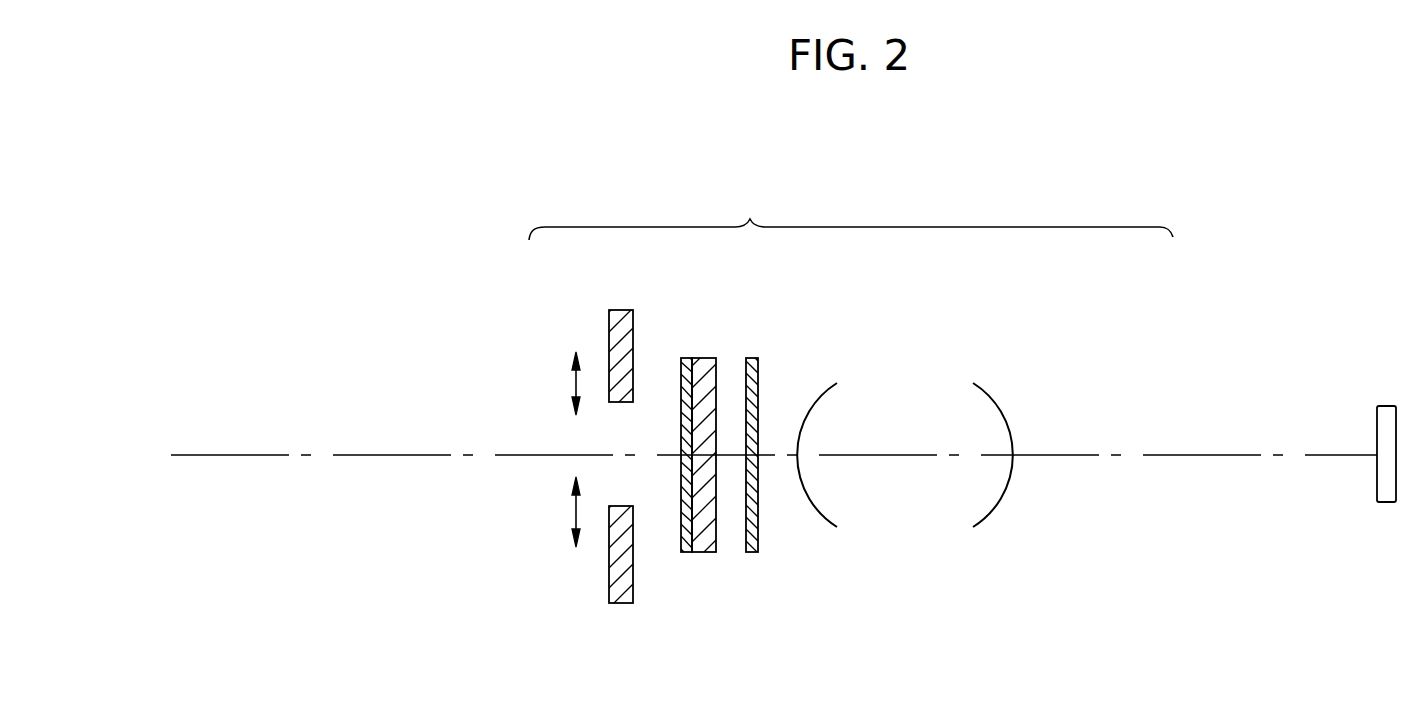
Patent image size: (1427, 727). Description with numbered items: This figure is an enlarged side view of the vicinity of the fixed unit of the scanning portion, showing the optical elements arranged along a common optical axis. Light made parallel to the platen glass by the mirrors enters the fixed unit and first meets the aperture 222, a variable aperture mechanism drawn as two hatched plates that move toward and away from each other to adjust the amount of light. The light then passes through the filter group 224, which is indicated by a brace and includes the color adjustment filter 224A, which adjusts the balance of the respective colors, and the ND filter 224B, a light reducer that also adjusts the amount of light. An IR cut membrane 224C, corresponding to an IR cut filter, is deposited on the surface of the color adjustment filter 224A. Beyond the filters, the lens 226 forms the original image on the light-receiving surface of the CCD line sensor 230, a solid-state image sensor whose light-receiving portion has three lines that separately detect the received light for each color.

The aperture 222 is at (615, 330).
The filter group 224 is at (851, 212).
The IR cut membrane 224C is at (686, 358).
The color adjustment filter 224A is at (703, 358).
The ND filter 224B is at (752, 358).
The lens 226 is at (932, 382).
The CCD line sensor 230 is at (1385, 406).